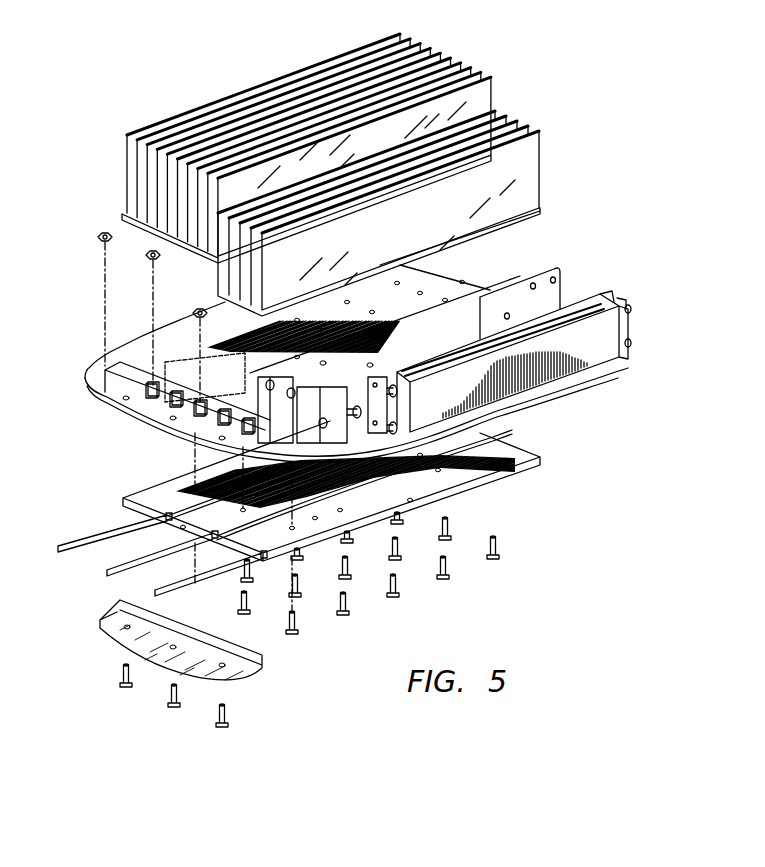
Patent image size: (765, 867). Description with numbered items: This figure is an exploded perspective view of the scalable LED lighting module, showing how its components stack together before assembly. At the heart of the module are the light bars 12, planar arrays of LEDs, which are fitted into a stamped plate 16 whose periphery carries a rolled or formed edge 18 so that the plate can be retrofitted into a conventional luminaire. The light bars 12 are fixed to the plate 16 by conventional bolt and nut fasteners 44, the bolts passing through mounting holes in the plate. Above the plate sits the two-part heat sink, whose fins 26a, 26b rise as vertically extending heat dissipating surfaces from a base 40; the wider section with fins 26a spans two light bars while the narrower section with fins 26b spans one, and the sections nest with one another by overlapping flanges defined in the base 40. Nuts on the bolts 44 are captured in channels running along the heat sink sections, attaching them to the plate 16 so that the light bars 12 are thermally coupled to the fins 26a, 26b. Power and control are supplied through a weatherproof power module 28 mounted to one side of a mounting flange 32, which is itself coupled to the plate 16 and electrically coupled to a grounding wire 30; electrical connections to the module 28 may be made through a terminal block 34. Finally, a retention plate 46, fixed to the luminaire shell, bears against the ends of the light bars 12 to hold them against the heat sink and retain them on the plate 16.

The light bar 12 is at (513, 440).
The stamped plate 16 is at (136, 351).
The rolled or formed edge 18 is at (185, 303).
The heat sink section (fins) 26a is at (489, 93).
The heat sink section (fins) 26b is at (513, 119).
The power module 28 is at (600, 355).
The grounding wire 30 is at (262, 427).
The mounting flange 32 is at (548, 297).
The terminal block 34 is at (348, 380).
The base 40 is at (153, 242).
The bolt and nut fasteners 44 is at (500, 549).
The retention plate 46 is at (142, 636).